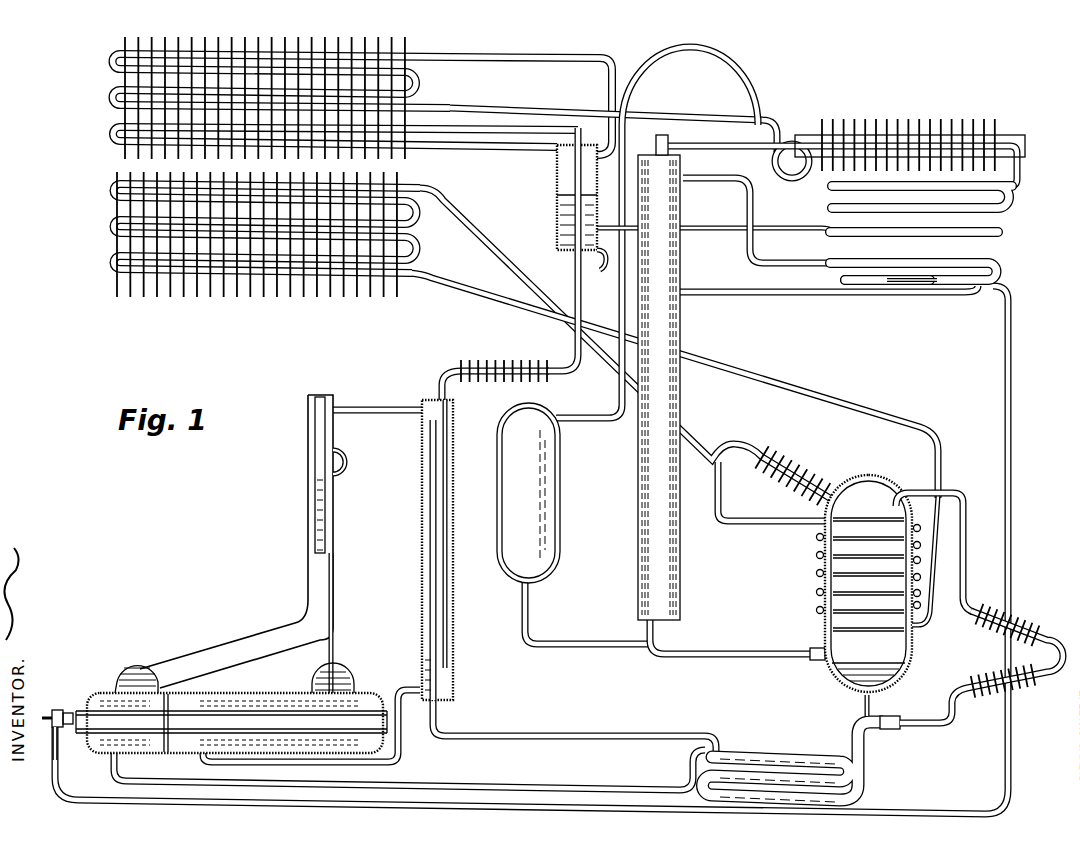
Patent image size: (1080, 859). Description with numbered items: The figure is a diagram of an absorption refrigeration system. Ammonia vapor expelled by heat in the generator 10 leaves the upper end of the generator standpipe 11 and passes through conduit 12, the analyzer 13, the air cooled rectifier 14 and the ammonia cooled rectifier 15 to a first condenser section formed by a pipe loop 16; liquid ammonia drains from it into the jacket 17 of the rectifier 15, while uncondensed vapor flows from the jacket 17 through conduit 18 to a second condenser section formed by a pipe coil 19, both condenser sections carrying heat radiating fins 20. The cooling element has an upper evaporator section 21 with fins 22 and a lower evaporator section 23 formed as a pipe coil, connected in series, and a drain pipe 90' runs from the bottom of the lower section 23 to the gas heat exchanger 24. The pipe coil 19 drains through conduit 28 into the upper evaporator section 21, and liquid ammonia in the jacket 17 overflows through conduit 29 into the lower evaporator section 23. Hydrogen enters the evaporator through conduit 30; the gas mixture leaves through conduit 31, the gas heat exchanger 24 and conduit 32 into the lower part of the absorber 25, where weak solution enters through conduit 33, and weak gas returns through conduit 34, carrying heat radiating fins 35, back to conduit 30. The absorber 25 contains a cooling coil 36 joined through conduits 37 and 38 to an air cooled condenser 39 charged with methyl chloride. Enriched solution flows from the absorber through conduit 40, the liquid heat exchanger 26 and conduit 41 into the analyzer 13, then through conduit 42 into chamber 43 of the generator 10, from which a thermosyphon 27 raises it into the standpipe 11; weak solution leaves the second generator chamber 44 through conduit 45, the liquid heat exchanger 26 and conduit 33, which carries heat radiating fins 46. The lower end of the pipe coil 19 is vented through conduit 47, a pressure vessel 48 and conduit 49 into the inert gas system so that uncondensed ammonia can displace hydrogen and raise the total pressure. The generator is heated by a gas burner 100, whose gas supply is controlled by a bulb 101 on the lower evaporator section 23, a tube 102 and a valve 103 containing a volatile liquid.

The generator 10 is at (250, 690).
The generator standpipe 11 is at (307, 571).
The conduit 12 is at (392, 396).
The analyzer 13 is at (420, 597).
The air cooled rectifier 14 is at (500, 363).
The ammonia cooled rectifier 15 is at (560, 226).
The pipe loop 16 is at (106, 142).
The rectifier jacket 17 is at (599, 265).
The conduit 18 is at (586, 57).
The pipe coil 19 is at (417, 85).
The heat radiating fins 20 is at (246, 46).
The upper evaporator section 21 is at (1000, 137).
The fins 22 is at (968, 123).
The lower evaporator section 23 is at (1006, 207).
The gas heat exchanger 24 is at (660, 396).
The absorber 25 is at (885, 460).
The liquid heat exchanger 26 is at (750, 748).
The thermosyphon 27 is at (334, 648).
The conduit 28 is at (668, 113).
The conduit 29 is at (728, 232).
The conduit 30 is at (758, 267).
The conduit 31 is at (783, 145).
The conduit 32 is at (710, 645).
The conduit 33 is at (958, 594).
The conduit 34 is at (733, 442).
The heat radiating fins 35 is at (812, 462).
The cooling coil 36 is at (816, 551).
The conduit 37 is at (792, 527).
The conduit 38 is at (867, 405).
The air cooled condenser 39 is at (413, 250).
The conduit 40 is at (872, 710).
The conduit 41 is at (530, 740).
The conduit 42 is at (400, 749).
The generator chamber 43 is at (363, 707).
The second generator chamber 44 is at (100, 690).
The conduit 45 is at (392, 791).
The heat radiating fins 46 is at (1012, 672).
The conduit 47 is at (740, 63).
The pressure vessel 48 is at (528, 503).
The conduit 49 is at (565, 641).
The drain pipe 90' is at (829, 297).
The gas burner 100 is at (70, 712).
The bulb 101 is at (913, 285).
The tube 102 is at (1006, 357).
The valve 103 is at (60, 730).